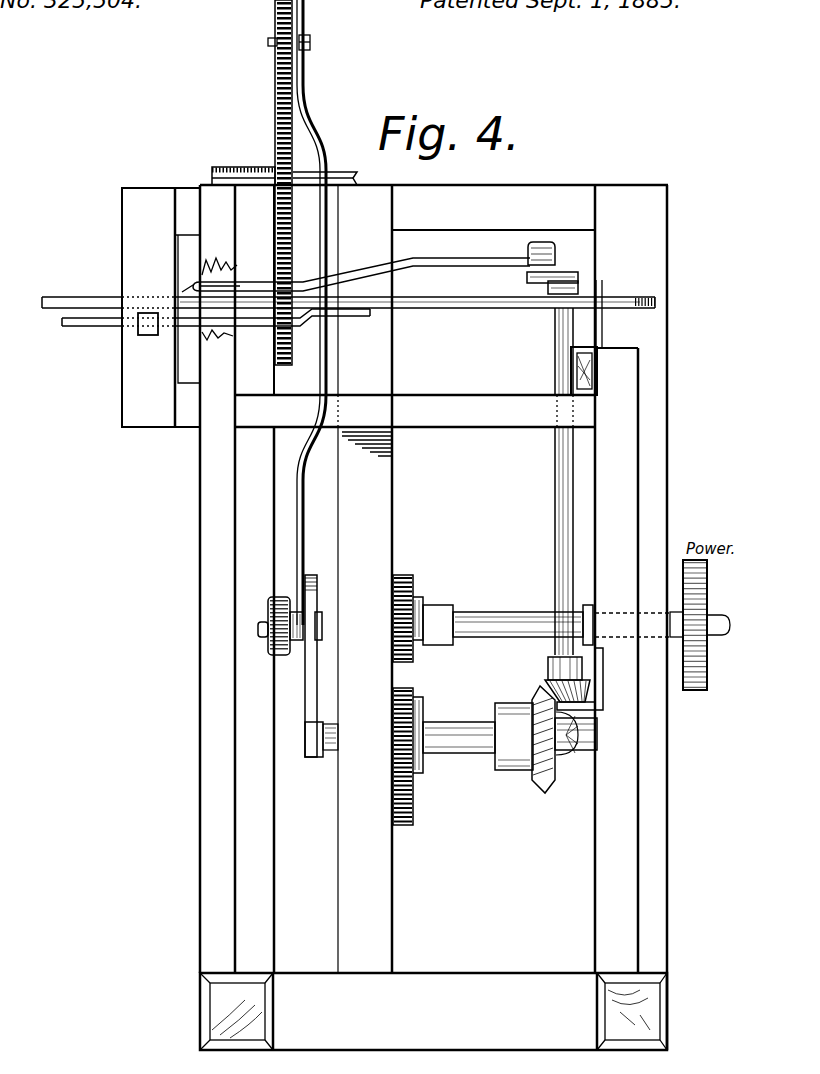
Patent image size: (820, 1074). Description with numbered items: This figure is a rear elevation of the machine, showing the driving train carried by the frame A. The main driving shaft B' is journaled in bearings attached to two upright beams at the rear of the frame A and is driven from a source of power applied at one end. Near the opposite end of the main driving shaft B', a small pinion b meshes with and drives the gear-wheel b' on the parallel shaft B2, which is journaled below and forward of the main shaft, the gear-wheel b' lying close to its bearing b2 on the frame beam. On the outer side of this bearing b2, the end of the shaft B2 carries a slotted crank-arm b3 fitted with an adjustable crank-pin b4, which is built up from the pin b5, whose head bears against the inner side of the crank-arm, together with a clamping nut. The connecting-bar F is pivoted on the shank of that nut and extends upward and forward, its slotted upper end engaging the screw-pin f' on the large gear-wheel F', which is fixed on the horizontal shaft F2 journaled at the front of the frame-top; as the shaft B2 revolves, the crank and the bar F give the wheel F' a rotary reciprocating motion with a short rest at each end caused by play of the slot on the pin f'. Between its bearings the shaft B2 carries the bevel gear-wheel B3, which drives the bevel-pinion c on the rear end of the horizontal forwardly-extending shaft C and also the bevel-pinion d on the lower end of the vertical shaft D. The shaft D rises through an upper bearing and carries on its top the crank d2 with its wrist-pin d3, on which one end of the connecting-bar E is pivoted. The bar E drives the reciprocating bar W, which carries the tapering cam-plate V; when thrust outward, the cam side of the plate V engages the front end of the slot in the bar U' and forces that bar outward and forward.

The frame A is at (395, 617).
The large gear-wheel F' is at (267, 182).
The screw-pin f' is at (276, 52).
The horizontal shaft F2 is at (357, 179).
The connecting-bar F is at (311, 312).
The connecting-bar E is at (472, 266).
The reciprocating bar W is at (428, 309).
The cam-plate V is at (105, 327).
The bar U' is at (148, 339).
The vertical shaft D is at (565, 364).
The crank d2 is at (556, 276).
The crank-pin or wrist-pin d3 is at (546, 278).
The small gear-wheel or pinion b is at (416, 613).
The main driving shaft B' is at (546, 617).
The gear-wheel b' is at (416, 756).
The parallel shaft B2 is at (470, 722).
The bevel gear-wheel B3 is at (550, 782).
The bevel-pinion c is at (572, 750).
The horizontal forwardly-extending shaft C is at (585, 736).
The bevel-pinion d is at (604, 690).
The bearing b2 is at (272, 602).
The pin b5 is at (261, 638).
The slotted crank-arm b3 is at (313, 650).
The adjustable crank-pin b4 is at (323, 628).